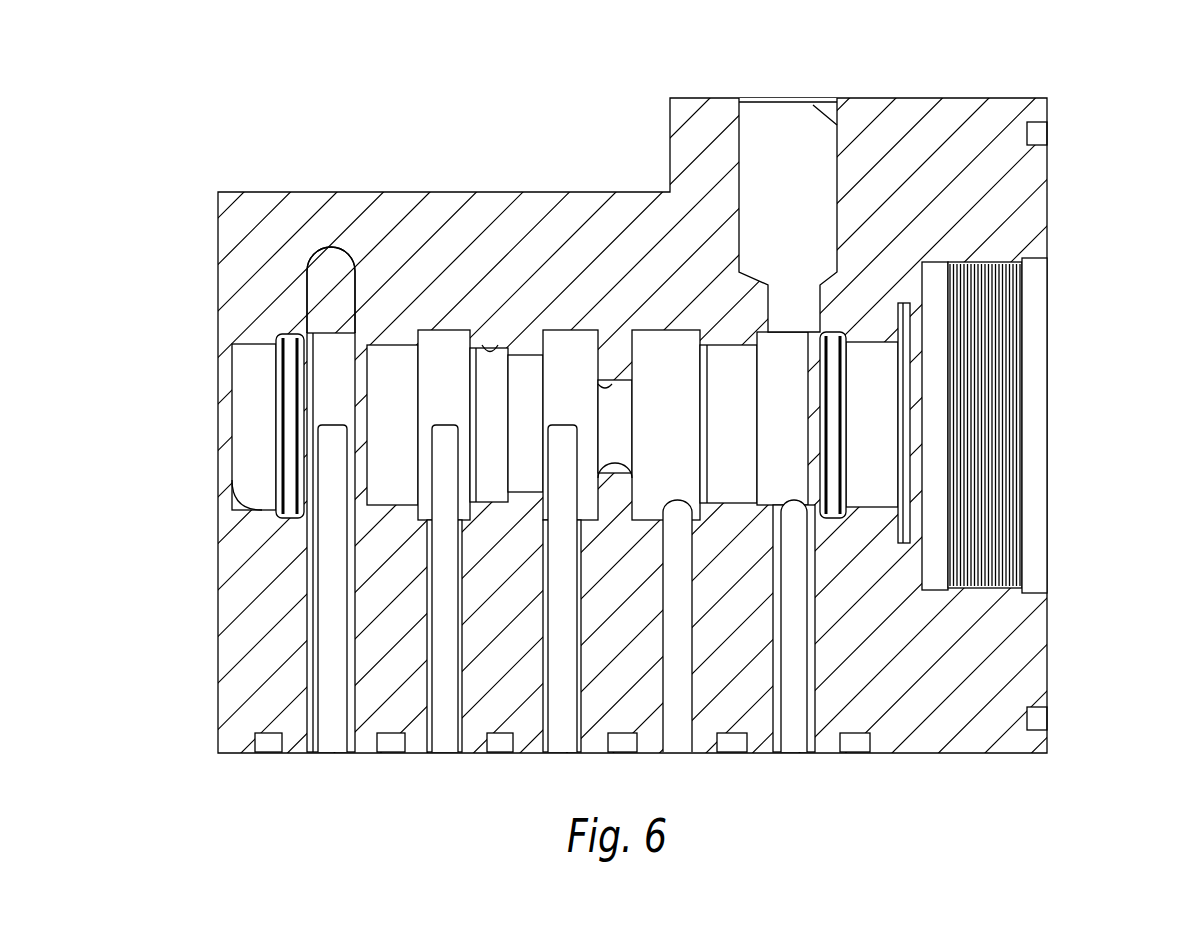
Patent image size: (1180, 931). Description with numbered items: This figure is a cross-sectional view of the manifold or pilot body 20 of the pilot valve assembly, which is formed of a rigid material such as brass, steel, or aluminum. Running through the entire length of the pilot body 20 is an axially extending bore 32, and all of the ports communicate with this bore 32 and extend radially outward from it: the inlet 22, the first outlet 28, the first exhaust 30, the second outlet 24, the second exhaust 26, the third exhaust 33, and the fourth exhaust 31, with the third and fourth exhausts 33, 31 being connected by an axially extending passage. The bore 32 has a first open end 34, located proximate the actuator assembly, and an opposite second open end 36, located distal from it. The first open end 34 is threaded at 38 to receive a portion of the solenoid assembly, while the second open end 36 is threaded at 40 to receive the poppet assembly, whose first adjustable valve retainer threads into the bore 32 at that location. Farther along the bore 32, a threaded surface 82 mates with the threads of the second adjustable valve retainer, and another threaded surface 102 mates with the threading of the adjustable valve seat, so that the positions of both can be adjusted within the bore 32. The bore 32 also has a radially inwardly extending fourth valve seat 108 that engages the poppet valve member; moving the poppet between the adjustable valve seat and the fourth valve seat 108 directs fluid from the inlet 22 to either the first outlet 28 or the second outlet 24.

The pilot body 20 is at (590, 425).
The inlet 22 is at (558, 733).
The second outlet 24 is at (675, 733).
The second exhaust 26 is at (795, 723).
The first outlet 28 is at (447, 733).
The first exhaust 30 is at (330, 728).
The fourth exhaust 31 is at (818, 98).
The bore 32 is at (243, 485).
The third exhaust 33 is at (316, 270).
The first open end 34 is at (1048, 266).
The second open end 36 is at (217, 397).
The threading of first open end 38 is at (1000, 556).
The threading of second open end 40 is at (248, 342).
The threaded surface 82 is at (833, 333).
The threaded surface 102 is at (490, 352).
The fourth valve seat 108 is at (602, 384).